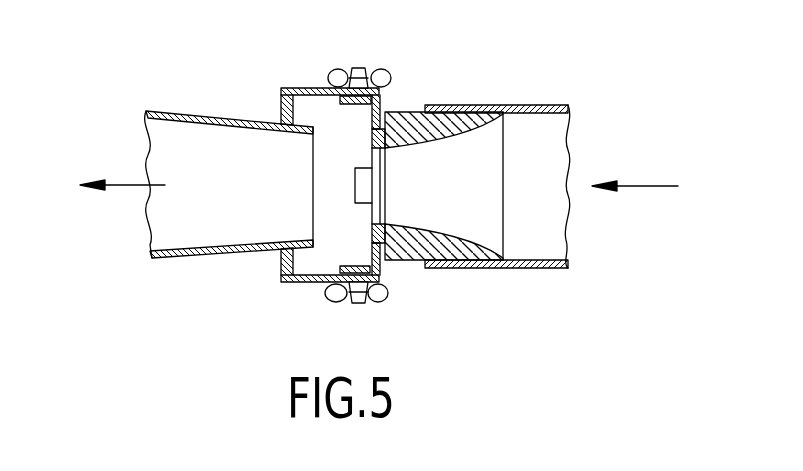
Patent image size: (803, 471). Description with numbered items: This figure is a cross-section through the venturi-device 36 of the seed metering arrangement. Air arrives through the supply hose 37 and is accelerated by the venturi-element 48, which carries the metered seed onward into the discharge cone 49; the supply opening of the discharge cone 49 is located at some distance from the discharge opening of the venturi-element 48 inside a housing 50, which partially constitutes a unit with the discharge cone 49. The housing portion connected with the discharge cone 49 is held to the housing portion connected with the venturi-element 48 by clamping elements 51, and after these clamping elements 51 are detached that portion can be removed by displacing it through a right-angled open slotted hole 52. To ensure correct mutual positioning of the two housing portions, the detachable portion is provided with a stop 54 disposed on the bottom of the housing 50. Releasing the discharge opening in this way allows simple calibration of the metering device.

The venturi-device 36 is at (392, 350).
The supply hose 37 is at (527, 105).
The venturi-element 48 is at (409, 110).
The discharge cone 49 is at (160, 110).
The housing 50 is at (283, 88).
The clamping elements 51 is at (387, 69).
The right-angled open slotted hole 52 is at (382, 283).
The stop 54 is at (362, 168).